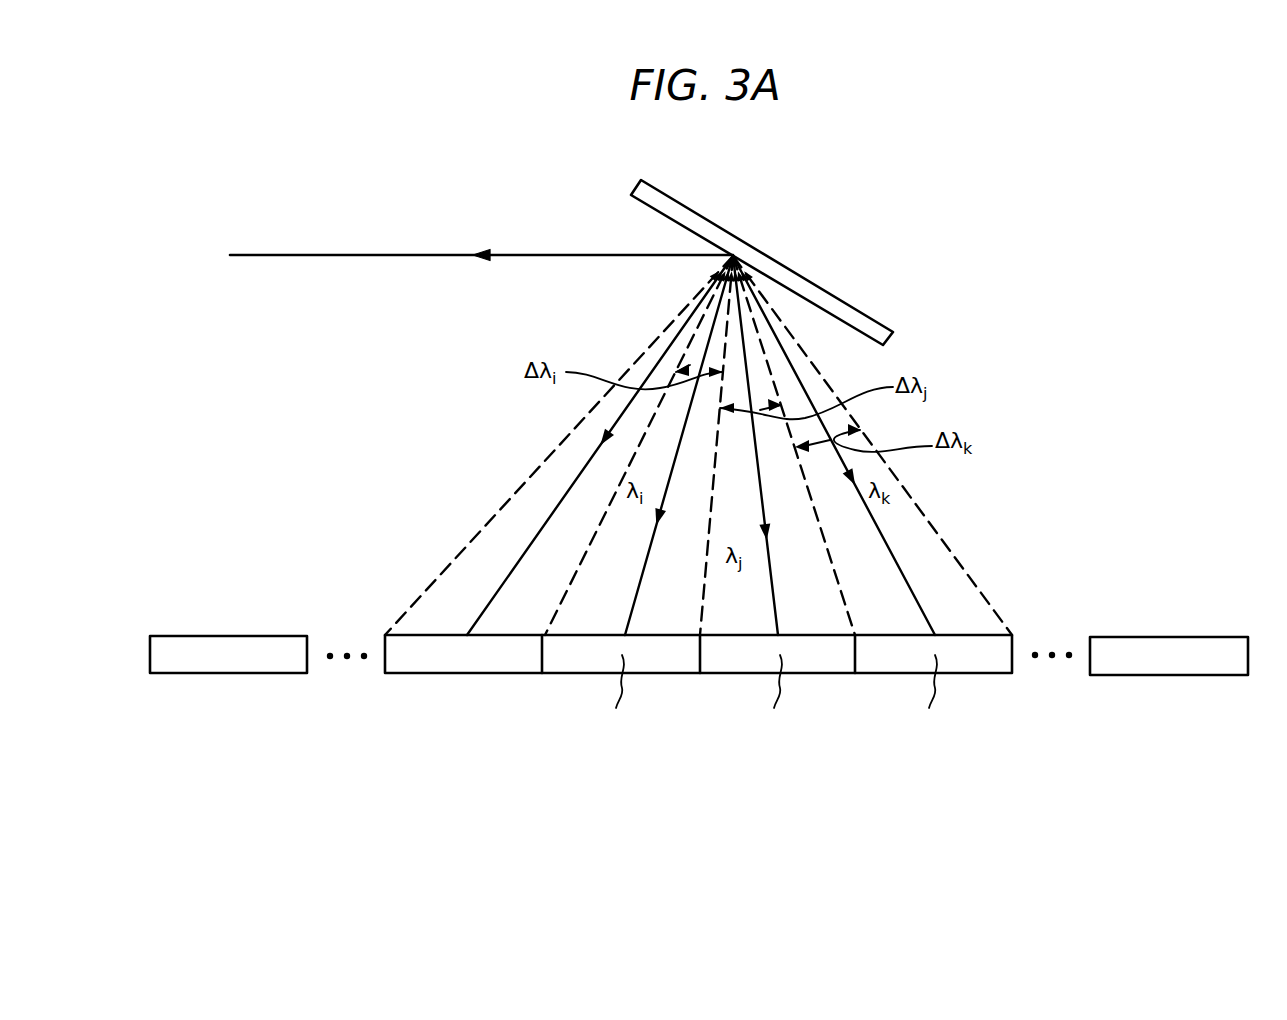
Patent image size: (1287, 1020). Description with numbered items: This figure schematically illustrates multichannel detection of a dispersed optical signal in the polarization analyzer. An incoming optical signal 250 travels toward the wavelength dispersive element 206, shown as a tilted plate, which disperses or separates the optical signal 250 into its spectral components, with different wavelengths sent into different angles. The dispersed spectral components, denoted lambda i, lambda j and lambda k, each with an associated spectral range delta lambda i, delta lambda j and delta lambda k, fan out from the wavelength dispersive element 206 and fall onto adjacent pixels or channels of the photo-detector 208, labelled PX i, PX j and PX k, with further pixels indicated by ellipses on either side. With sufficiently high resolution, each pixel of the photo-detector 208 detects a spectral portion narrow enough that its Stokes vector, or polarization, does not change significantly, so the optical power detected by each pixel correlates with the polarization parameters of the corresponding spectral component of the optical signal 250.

The optical signal 250 is at (440, 253).
The wavelength dispersive element 206 is at (850, 300).
The photo-detector 208 is at (1063, 710).